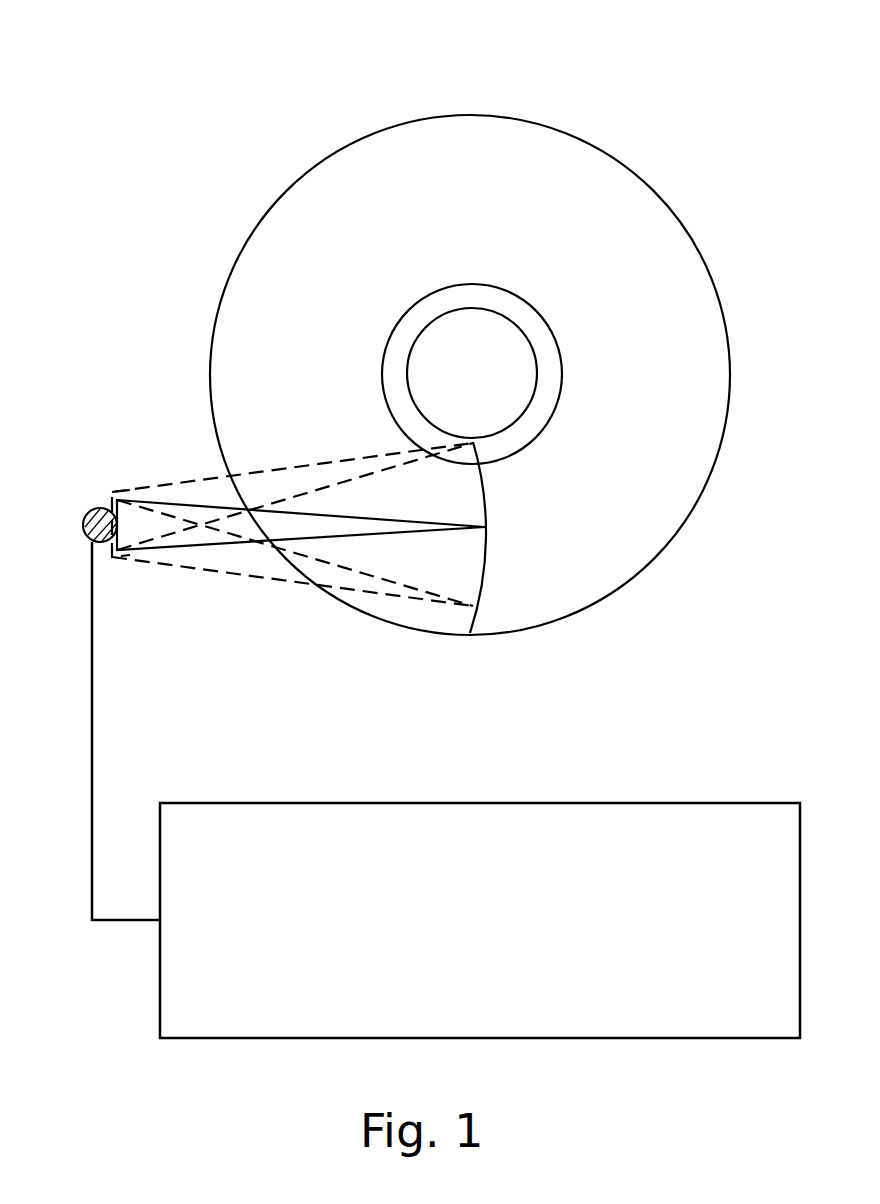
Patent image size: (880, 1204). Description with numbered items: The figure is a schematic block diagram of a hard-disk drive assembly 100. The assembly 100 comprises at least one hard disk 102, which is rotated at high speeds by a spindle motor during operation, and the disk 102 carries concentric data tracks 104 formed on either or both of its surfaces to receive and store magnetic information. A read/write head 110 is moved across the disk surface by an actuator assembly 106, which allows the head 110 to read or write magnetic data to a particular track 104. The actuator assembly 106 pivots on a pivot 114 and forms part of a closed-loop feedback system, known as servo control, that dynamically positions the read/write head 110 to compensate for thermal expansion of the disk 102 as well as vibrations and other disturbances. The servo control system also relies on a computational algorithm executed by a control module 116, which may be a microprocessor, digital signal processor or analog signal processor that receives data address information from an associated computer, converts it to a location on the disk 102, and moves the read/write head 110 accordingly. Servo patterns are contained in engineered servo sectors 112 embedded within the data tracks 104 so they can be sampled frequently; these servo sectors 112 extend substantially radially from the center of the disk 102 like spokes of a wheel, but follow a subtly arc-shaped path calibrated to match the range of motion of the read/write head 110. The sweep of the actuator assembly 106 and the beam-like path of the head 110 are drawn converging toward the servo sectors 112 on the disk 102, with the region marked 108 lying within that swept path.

The hard-disk drive assembly 100 is at (168, 50).
The hard disk 102 is at (449, 208).
The concentric data tracks 104 is at (562, 352).
The actuator assembly 106 is at (125, 473).
The light beam 108 is at (310, 520).
The read/write head 110 is at (465, 530).
The servo sectors 112 is at (487, 490).
The pivot 114 is at (83, 517).
The control module 116 is at (499, 930).